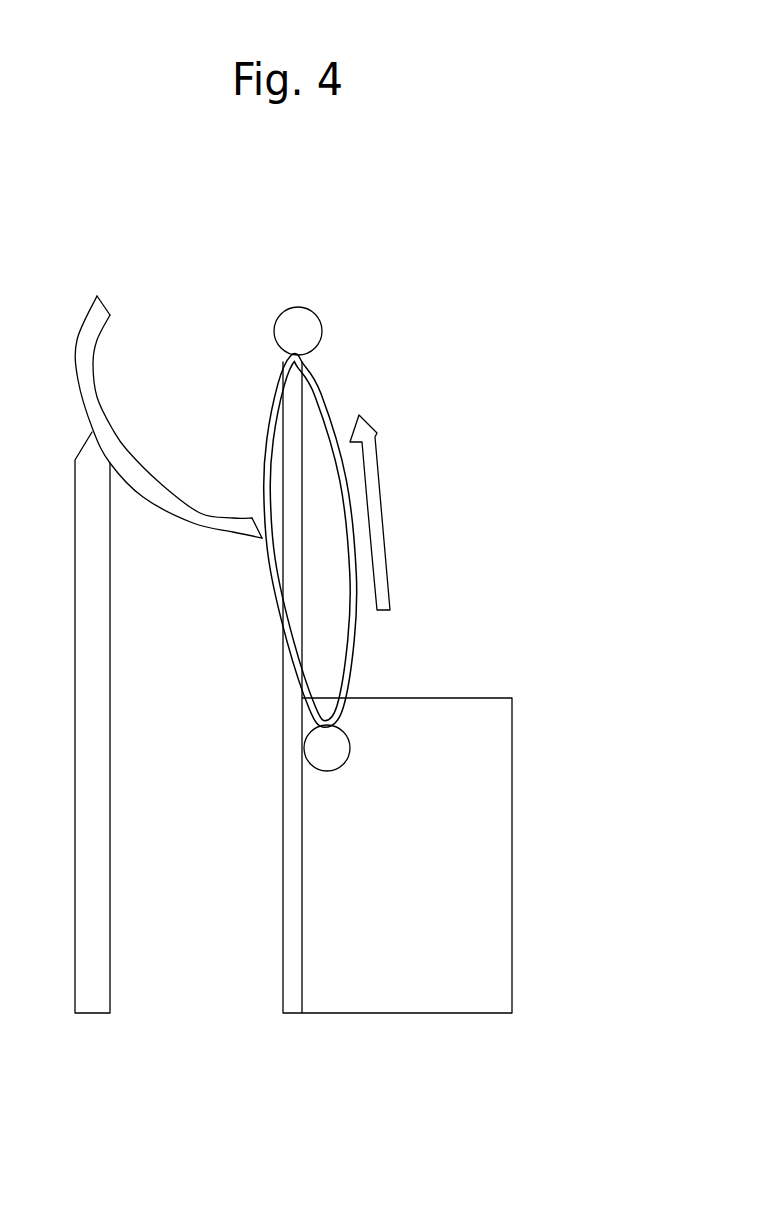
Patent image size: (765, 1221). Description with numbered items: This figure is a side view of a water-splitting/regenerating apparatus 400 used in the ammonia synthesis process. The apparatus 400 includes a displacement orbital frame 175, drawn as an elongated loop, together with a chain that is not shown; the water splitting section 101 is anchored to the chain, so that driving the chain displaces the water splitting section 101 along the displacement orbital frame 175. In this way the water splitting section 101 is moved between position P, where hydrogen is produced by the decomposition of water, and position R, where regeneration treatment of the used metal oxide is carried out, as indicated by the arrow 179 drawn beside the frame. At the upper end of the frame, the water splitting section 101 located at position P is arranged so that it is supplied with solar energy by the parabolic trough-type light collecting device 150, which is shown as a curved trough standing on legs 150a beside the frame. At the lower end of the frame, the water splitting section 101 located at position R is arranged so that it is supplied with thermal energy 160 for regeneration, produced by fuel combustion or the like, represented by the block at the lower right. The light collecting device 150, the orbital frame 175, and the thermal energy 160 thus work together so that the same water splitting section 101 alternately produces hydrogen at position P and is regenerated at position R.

The water-splitting/regenerating apparatus 400 is at (463, 237).
The parabolic trough-type light collecting device 150 is at (110, 313).
The legs 150a is at (110, 692).
The displacement orbital frame 175 is at (270, 387).
The thermal energy 160 is at (503, 694).
The water splitting section 101 is at (298, 325).
The position P is at (332, 337).
The position R is at (354, 757).
The arrow 179 is at (388, 528).